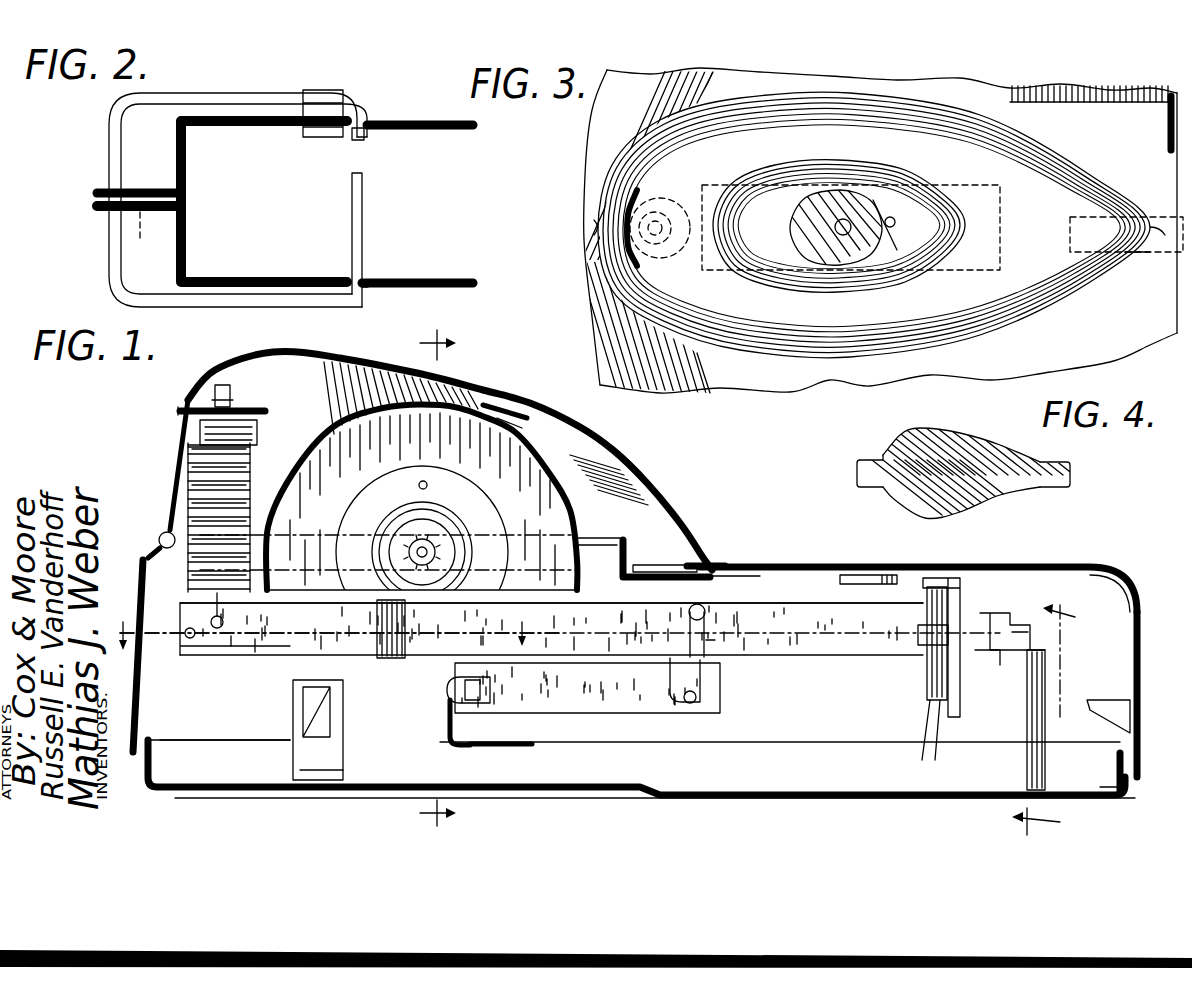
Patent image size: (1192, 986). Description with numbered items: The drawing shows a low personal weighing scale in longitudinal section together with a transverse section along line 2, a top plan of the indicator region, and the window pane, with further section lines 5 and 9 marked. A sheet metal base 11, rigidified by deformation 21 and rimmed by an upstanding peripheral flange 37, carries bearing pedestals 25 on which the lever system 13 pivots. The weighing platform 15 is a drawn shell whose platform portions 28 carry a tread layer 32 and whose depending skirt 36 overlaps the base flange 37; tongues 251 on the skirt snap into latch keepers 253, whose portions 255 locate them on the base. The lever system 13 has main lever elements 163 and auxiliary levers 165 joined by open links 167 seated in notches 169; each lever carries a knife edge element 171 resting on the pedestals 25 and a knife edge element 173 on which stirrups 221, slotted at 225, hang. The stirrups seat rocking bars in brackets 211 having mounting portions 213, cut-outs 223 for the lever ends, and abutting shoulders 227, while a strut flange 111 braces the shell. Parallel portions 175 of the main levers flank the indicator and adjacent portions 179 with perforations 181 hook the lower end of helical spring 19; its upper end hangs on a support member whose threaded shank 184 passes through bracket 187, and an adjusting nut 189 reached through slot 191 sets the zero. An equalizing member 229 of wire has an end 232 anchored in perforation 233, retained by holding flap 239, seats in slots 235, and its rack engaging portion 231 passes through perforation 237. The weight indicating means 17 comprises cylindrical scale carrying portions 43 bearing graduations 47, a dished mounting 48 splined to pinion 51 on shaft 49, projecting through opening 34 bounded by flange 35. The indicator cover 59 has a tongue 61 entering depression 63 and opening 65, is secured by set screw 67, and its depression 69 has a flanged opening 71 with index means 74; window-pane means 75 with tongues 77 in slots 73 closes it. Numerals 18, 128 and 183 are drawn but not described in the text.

In FIG. 1, the section line 2— 2 is at (332, 630).
In FIG. 1, the section line 5— 5 is at (425, 578).
In FIG. 1, the section line 9— 9 is at (1050, 720).
In FIG. 1, the base 11 is at (707, 780).
In FIG. 1, the lever system 13 is at (767, 663).
In FIG. 3, the weighing platform 15 is at (590, 298).
In FIG. 4, the weighing platform 15 is at (989, 473).
In FIG. 1, the weighing platform 15 is at (1057, 560).
In FIG. 3, the weight indicating means 17 is at (1008, 268).
In FIG. 1, the weight indicating means 17 is at (580, 469).
In FIG. 1, the cover corner 18 is at (1118, 570).
In FIG. 1, the helical spring 19 is at (252, 480).
In FIG. 1, the deformation 21 is at (215, 785).
In FIG. 1, the bearing pedestals 25 is at (485, 762).
In FIG. 3, the platform portions 28 is at (602, 117).
In FIG. 3, the tread layer 32 is at (1092, 116).
In FIG. 1, the tread layer 32 is at (1000, 566).
In FIG. 1, the opening 34 is at (600, 537).
In FIG. 1, the upstanding flange 35 is at (635, 555).
In FIG. 1, the skirt 36 is at (142, 690).
In FIG. 1, the upstanding peripheral flange 37 is at (183, 740).
In FIG. 1, the cylindrical scale carrying portions 43 is at (304, 455).
In FIG. 3, the weight scale graduations 47 is at (858, 268).
In FIG. 1, the dished mounting 48 is at (445, 505).
In FIG. 1, the shaft 49 is at (460, 535).
In FIG. 1, the pinion 51 is at (418, 539).
In FIG. 3, the indicator cover 59 is at (1018, 150).
In FIG. 1, the indicator cover 59 is at (580, 428).
In FIG. 3, the tongue 61 is at (1130, 256).
In FIG. 1, the tongue 61 is at (725, 576).
In FIG. 3, the depression 63 is at (1097, 217).
In FIG. 1, the depression 63 is at (660, 566).
In FIG. 3, the opening 65 is at (1140, 218).
In FIG. 1, the opening 65 is at (692, 565).
In FIG. 3, the set screw 67 is at (595, 222).
In FIG. 1, the set screw 67 is at (162, 534).
In FIG. 3, the depression 69 is at (764, 186).
In FIG. 1, the depression 69 is at (356, 395).
In FIG. 3, the marginal flange 71 is at (822, 185).
In FIG. 1, the marginal flange 71 is at (482, 403).
In FIG. 3, the slots 73 is at (788, 212).
In FIG. 3, the index means 74 is at (850, 186).
In FIG. 3, the window-pane means 75 is at (872, 192).
In FIG. 4, the window-pane means 75 is at (928, 436).
In FIG. 1, the window-pane means 75 is at (500, 410).
In FIG. 3, the tongues 77 is at (1000, 240).
In FIG. 4, the tongues 77 is at (870, 461).
In FIG. 1, the flange 111 is at (515, 750).
In FIG. 3, the edge flange 128 is at (1160, 89).
In FIG. 2, the main lever element 163 is at (465, 131).
In FIG. 1, the main lever element 163 is at (889, 656).
In FIG. 1, the auxiliary lever 165 is at (605, 713).
In FIG. 1, the open link 167 is at (712, 648).
In FIG. 1, the notches 169 is at (688, 625).
In FIG. 1, the knife edge element 171 is at (1048, 633).
In FIG. 1, the knife edge element 173 is at (980, 663).
In FIG. 2, the lever portions 175 is at (254, 127).
In FIG. 2, the adjacent portions 179 is at (97, 196).
In FIG. 1, the adjacent portions 179 is at (210, 605).
In FIG. 2, the perforation 181 is at (146, 235).
In FIG. 1, the perforation 181 is at (265, 640).
In FIG. 1, the bellows top 183 is at (190, 456).
In FIG. 1, the threaded shank 184 is at (224, 385).
In FIG. 1, the bracket 187 is at (250, 431).
In FIG. 3, the adjusting nut 189 is at (695, 258).
In FIG. 1, the adjusting nut 189 is at (178, 411).
In FIG. 3, the slot 191 is at (628, 258).
In FIG. 1, the slot 191 is at (178, 406).
In FIG. 1, the brackets 211 is at (962, 594).
In FIG. 1, the mounting portion 213 is at (866, 575).
In FIG. 1, the stirrups 221 is at (492, 685).
In FIG. 1, the cut-outs 223 is at (925, 603).
In FIG. 1, the slot 225 is at (918, 640).
In FIG. 1, the abutting shoulders 227 is at (933, 742).
In FIG. 2, the equalizing member 229 is at (224, 93).
In FIG. 1, the equalizing member 229 is at (293, 688).
In FIG. 2, the rack engaging portion 231 is at (365, 207).
In FIG. 2, the wire end 232 is at (363, 137).
In FIG. 2, the perforation 233 is at (370, 112).
In FIG. 2, the slots 235 is at (95, 212).
In FIG. 1, the slots 235 is at (180, 640).
In FIG. 2, the perforation 237 is at (368, 291).
In FIG. 1, the holding flap 239 is at (378, 658).
In FIG. 1, the tongues 251 is at (303, 700).
In FIG. 1, the latch keepers 253 is at (320, 762).
In FIG. 1, the keeper portions 255 is at (1106, 796).